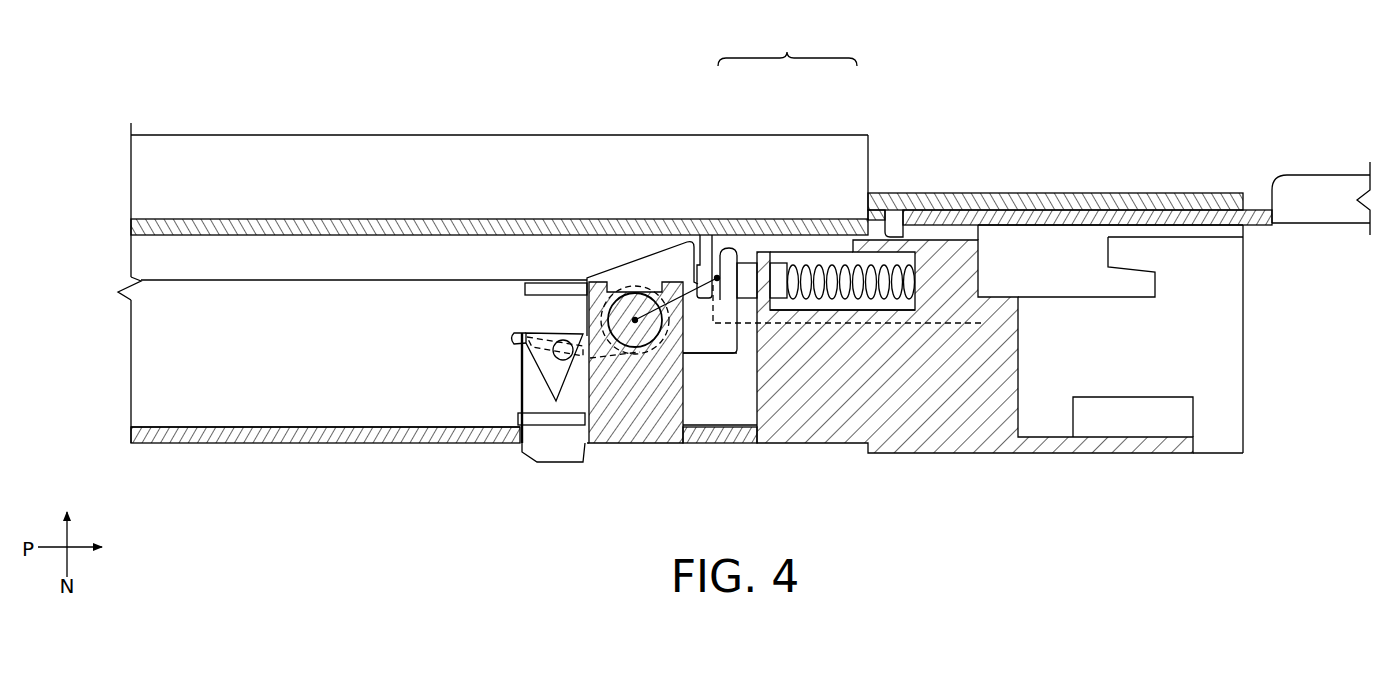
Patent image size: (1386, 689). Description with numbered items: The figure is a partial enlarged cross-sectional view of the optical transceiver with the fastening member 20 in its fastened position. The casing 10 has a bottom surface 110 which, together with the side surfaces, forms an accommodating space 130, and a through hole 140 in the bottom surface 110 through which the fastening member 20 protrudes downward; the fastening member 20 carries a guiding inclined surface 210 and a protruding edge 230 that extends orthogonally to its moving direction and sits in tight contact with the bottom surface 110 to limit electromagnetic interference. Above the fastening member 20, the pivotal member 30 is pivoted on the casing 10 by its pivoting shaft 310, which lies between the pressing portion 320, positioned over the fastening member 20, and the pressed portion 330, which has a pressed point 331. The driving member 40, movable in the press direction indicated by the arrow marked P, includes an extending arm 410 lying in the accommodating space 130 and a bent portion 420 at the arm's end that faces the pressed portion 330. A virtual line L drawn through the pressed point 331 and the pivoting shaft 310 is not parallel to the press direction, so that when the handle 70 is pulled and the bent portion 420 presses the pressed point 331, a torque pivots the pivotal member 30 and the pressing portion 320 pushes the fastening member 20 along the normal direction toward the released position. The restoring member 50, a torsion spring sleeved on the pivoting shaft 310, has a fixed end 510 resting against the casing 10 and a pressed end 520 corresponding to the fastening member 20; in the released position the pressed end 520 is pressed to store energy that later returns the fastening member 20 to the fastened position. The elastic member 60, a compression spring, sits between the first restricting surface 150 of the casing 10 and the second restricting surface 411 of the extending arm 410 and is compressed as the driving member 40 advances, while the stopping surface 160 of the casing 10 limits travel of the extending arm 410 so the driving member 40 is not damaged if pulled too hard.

The casing 10 is at (452, 116).
The fastening member 20 is at (516, 400).
The pivotal member 30 is at (638, 258).
The driving member 40 is at (787, 49).
The restoring member 50 is at (624, 286).
The elastic member 60 is at (848, 260).
The handle 70 is at (1323, 190).
The bottom surface 110 is at (347, 410).
The accommodating space 130 is at (307, 392).
The through hole 140 is at (588, 454).
The first restricting surface 150 is at (880, 280).
The stopping surface 160 is at (993, 322).
The guiding inclined surface 210 is at (530, 455).
The protruding edge 230 is at (537, 418).
The pivoting shaft 310 is at (645, 347).
The pressing portion 320 is at (537, 363).
The pressed portion 330 is at (728, 262).
The pressed point 331 is at (719, 354).
The extending arm 410 is at (808, 250).
The second restricting surface 411 is at (808, 254).
The bent portion 420 is at (706, 262).
The fixed end 510 is at (550, 290).
The pressed end 520 is at (550, 333).
The virtual line L is at (716, 283).